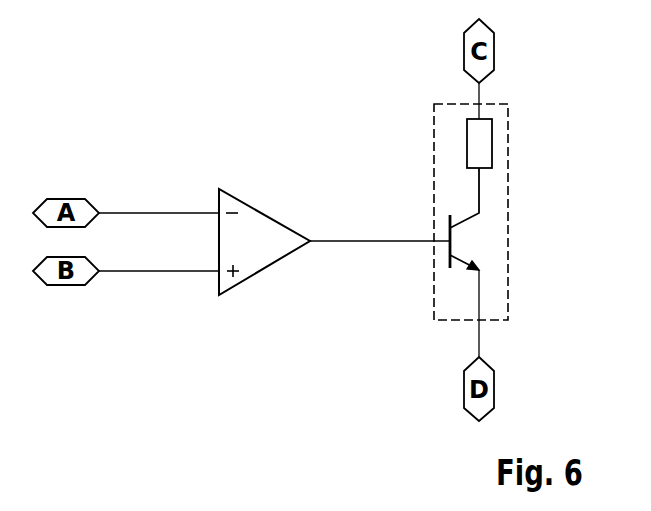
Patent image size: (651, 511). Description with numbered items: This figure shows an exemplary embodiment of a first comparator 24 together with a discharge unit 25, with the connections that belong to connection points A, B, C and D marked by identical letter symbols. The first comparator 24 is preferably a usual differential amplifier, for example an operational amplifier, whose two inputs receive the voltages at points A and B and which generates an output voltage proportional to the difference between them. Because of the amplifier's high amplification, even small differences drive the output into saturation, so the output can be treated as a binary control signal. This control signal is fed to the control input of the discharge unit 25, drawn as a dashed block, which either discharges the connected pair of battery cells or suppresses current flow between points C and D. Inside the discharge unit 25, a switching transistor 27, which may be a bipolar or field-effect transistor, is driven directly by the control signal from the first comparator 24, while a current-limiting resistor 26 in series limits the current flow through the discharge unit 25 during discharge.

The first comparator 24 is at (268, 210).
The discharge unit 25 is at (508, 118).
The current-limiting resistor 26 is at (492, 155).
The switching transistor 27 is at (452, 237).